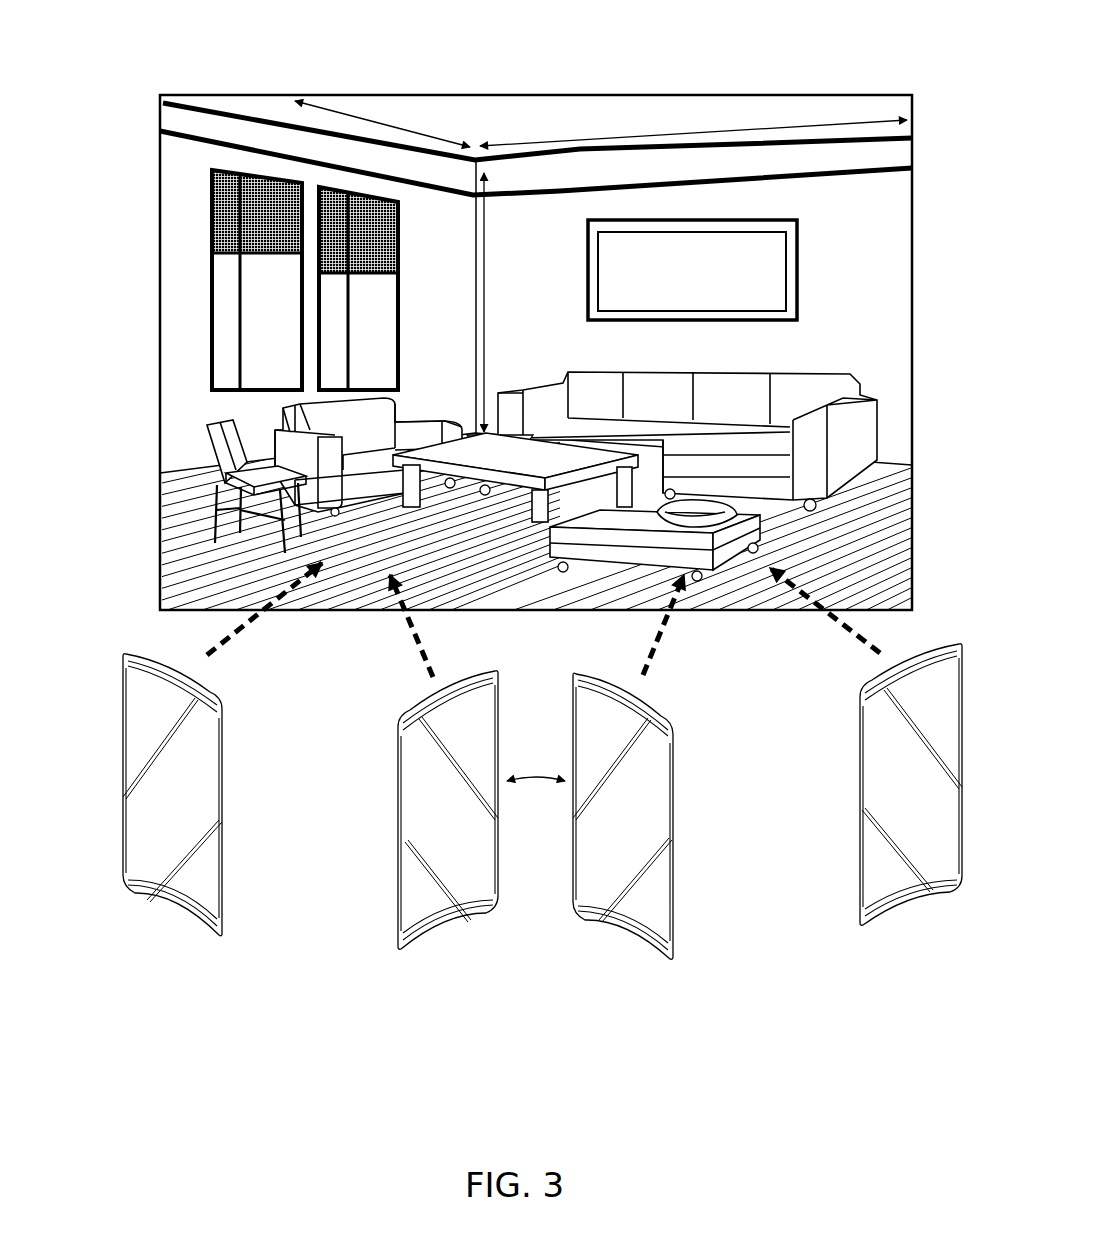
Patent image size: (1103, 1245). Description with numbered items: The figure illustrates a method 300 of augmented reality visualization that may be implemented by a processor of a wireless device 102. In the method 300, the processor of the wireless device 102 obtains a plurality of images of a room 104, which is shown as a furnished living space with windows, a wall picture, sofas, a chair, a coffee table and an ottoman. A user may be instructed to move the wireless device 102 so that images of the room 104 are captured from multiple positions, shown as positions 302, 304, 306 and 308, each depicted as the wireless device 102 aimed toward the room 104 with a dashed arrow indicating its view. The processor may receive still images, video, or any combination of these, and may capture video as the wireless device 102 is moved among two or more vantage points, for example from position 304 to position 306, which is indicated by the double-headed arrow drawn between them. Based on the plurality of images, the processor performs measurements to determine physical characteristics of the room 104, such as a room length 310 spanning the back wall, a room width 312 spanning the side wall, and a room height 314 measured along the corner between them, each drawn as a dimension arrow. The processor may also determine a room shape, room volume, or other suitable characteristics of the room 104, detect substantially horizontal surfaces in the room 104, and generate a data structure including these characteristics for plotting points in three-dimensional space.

The method 300 is at (79, 71).
The room 104 is at (780, 93).
The wireless device 102 is at (123, 654).
The position 302 is at (155, 932).
The position 304 is at (467, 957).
The position 306 is at (603, 957).
The position 308 is at (920, 929).
The room length 310 is at (565, 142).
The room width 312 is at (397, 126).
The room height 314 is at (486, 247).